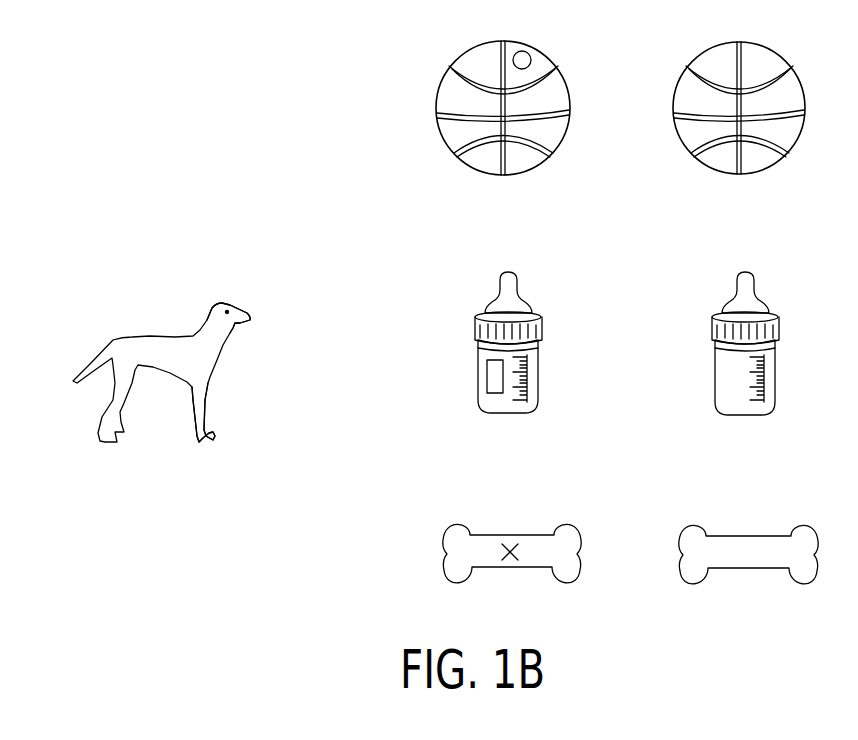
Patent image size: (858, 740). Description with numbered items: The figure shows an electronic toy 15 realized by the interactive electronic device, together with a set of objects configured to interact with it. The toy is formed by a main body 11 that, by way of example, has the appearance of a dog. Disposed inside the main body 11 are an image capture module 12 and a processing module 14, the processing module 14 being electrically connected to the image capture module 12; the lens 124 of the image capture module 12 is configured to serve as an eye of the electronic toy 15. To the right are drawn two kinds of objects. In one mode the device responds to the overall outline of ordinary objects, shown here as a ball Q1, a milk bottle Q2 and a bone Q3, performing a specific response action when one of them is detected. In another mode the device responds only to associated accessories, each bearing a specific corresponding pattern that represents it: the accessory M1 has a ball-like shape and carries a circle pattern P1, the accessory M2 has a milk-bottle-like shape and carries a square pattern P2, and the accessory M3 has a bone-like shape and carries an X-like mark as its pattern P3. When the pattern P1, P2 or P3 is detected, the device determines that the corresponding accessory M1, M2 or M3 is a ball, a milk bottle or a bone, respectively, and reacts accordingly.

The main body 11 is at (148, 337).
The image capture module 12 is at (235, 286).
The lens 124 is at (230, 303).
The processing module 14 is at (207, 403).
The electronic toy 15 is at (160, 464).
The accessory M1 is at (556, 143).
The pattern P1 is at (531, 57).
The ball Q1 is at (801, 97).
The accessory M2 is at (540, 395).
The pattern P2 is at (493, 394).
The milk bottle Q2 is at (780, 375).
The accessory M3 is at (581, 557).
The pattern P3 is at (505, 566).
The bone Q3 is at (742, 545).